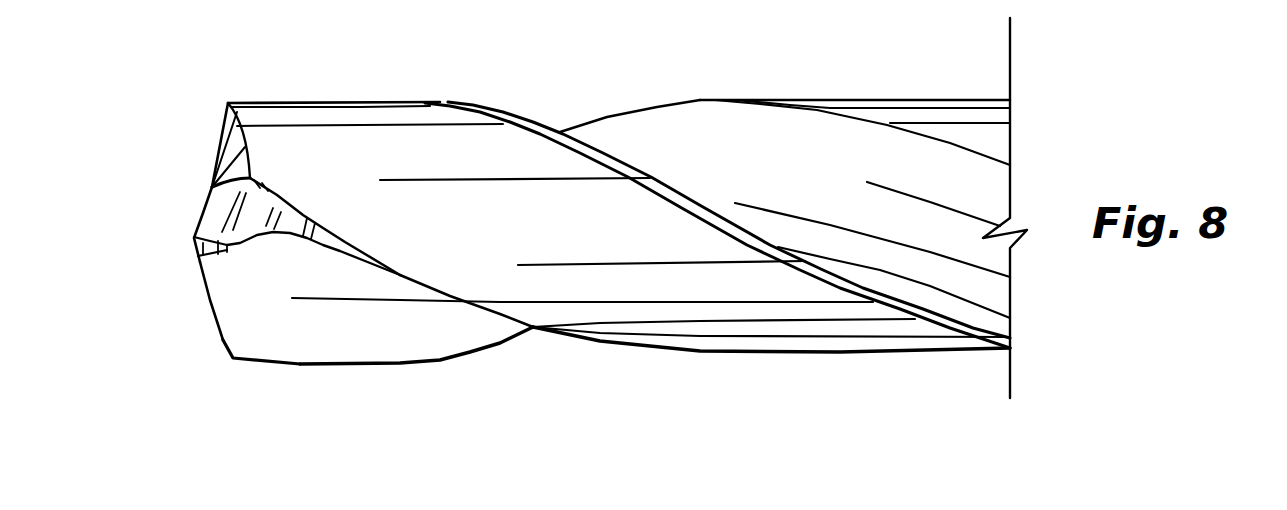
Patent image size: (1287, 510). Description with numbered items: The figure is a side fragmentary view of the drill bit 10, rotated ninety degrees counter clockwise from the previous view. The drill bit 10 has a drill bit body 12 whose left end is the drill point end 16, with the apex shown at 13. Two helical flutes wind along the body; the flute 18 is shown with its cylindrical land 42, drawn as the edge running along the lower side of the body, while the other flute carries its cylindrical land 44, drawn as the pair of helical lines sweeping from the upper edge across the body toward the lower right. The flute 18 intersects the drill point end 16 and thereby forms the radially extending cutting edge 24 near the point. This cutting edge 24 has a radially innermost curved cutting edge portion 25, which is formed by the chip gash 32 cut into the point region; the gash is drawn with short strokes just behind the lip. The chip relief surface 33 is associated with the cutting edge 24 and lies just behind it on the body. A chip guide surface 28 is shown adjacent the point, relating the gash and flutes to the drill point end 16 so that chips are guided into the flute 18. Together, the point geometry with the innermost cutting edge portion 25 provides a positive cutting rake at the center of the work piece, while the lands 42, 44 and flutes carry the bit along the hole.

The drill bit 10 is at (309, 84).
The drill bit body 12 is at (383, 102).
The apex 13 is at (203, 248).
The drill point end 16 is at (223, 340).
The flute 18 is at (817, 133).
The cutting edge 24 is at (210, 299).
The radially innermost curved cutting edge portion 25 is at (198, 250).
The chip guide surface 28 is at (217, 205).
The chip gash 32 is at (257, 210).
The chip relief surface 33 is at (221, 255).
The cylindrical land 42 is at (308, 364).
The cylindrical land 44 is at (503, 112).